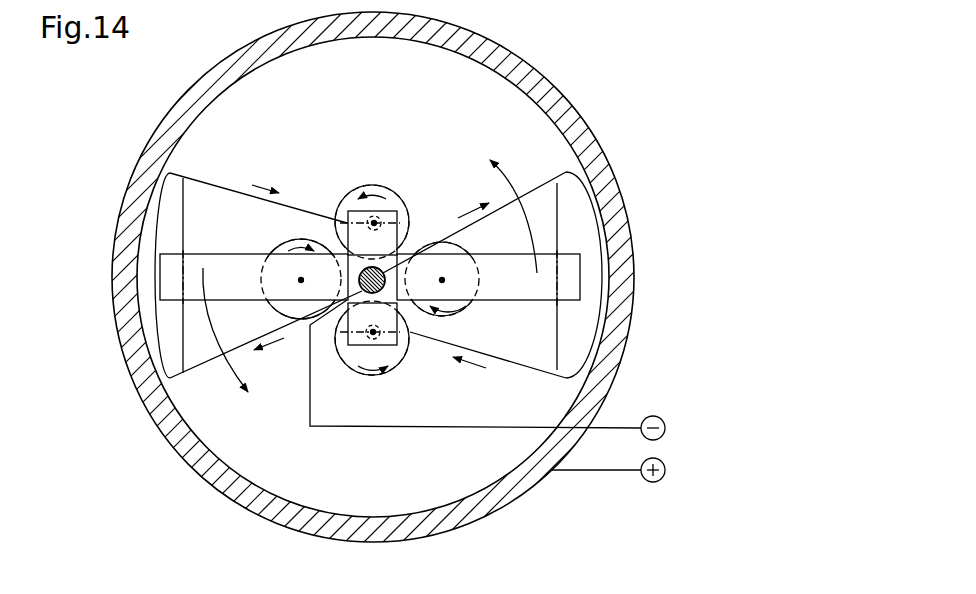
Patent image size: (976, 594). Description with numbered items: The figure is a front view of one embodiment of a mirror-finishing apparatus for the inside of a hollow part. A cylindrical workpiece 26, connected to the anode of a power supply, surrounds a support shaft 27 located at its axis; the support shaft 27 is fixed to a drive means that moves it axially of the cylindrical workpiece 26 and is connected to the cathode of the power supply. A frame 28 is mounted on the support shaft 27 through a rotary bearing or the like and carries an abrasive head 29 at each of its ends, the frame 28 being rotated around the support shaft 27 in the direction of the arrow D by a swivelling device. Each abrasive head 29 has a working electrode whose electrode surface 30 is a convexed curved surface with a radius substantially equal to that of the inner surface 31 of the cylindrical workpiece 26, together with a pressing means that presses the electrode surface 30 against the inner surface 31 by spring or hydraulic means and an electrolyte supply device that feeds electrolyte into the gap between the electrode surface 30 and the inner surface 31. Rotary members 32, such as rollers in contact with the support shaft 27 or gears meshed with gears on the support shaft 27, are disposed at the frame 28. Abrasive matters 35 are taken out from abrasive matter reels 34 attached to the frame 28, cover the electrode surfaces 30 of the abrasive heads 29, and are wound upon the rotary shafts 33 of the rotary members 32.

The cylindrical workpiece 26 is at (485, 507).
The support shaft 27 is at (384, 271).
The frame 28 is at (232, 262).
The abrasive head 29 is at (150, 328).
The electrode surface 30 is at (132, 270).
The inner surface 31 is at (372, 516).
The rotary member 32 is at (350, 197).
The rotary shaft 33 is at (374, 218).
The abrasive matter reel 34 is at (464, 309).
The abrasive matter 35 is at (213, 185).